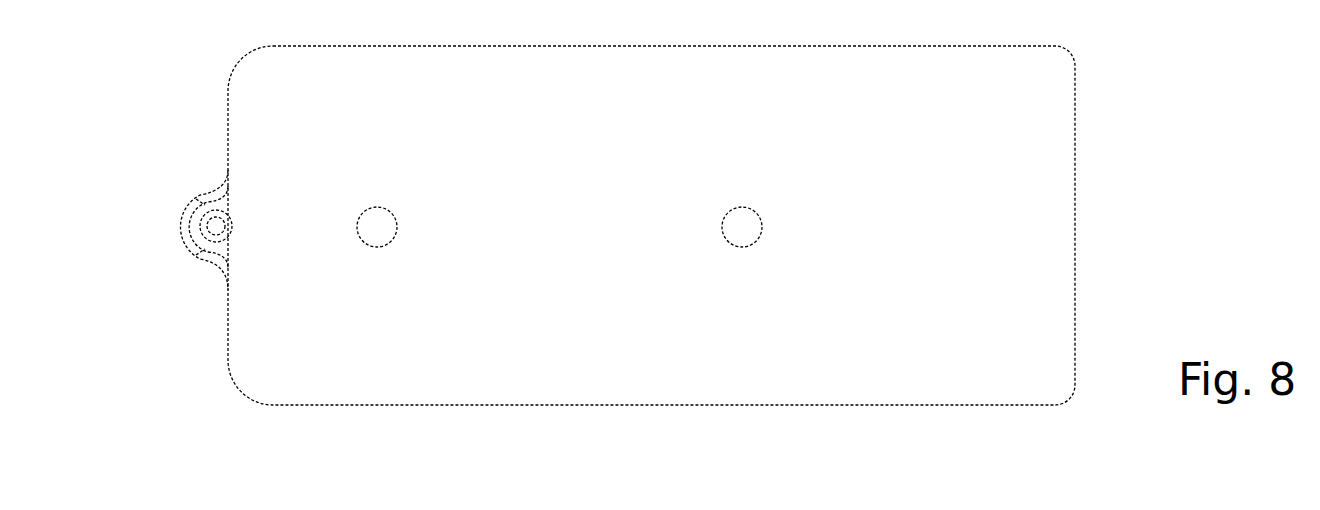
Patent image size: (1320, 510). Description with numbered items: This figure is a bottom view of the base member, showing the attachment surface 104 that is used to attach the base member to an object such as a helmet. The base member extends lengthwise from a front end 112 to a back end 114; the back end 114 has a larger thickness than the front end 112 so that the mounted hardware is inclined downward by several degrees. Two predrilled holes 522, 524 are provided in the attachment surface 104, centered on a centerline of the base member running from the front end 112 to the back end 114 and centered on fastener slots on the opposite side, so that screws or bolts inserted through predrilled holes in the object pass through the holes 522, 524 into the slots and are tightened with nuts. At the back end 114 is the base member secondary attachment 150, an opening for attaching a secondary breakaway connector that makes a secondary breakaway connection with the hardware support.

The front end 112 is at (1113, 222).
The attachment surface 104 is at (573, 232).
The back end 114 is at (191, 145).
The base member secondary attachment 150 is at (214, 228).
The predrilled hole 524 is at (381, 230).
The predrilled hole 522 is at (746, 230).